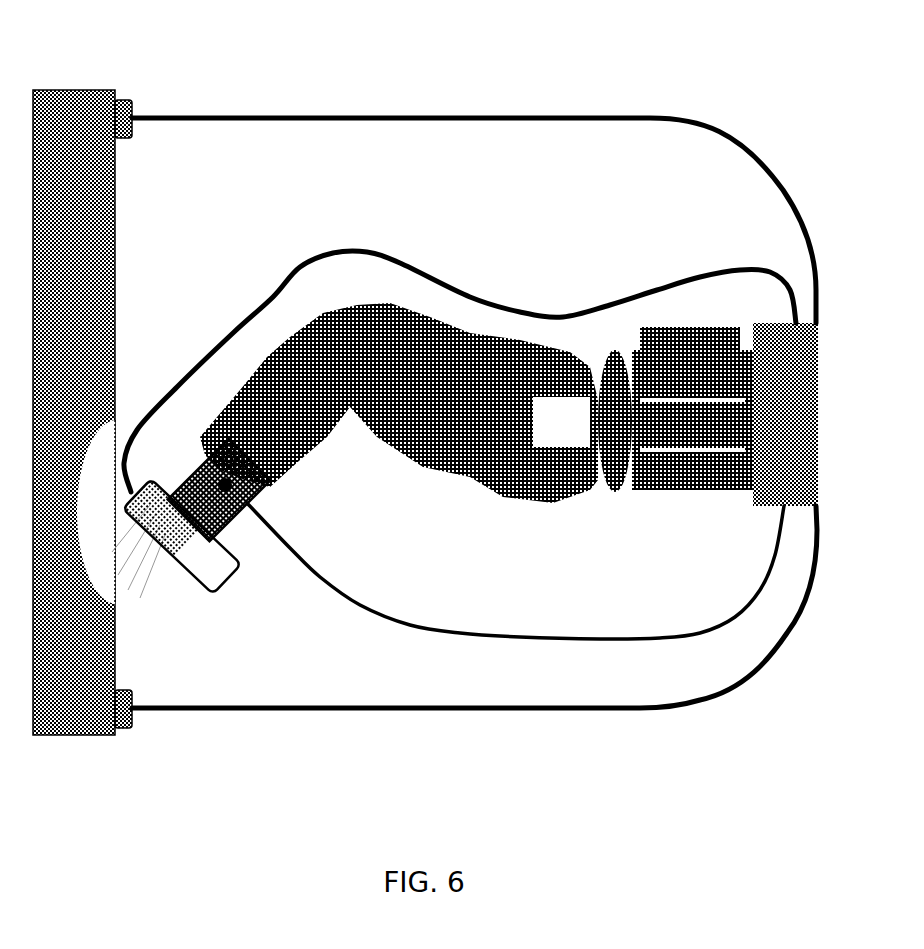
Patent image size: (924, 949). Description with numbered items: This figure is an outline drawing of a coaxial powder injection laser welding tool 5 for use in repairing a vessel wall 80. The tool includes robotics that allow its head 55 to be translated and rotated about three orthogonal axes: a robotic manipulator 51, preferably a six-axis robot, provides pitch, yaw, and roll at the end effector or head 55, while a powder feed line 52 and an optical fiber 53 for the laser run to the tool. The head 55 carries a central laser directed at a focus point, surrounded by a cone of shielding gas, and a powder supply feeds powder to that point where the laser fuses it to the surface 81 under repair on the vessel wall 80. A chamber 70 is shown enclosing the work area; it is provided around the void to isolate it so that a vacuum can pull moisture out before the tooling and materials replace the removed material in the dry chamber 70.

The coaxial powder injection laser welding tool 5 is at (438, 440).
The robotic manipulator 51 is at (462, 330).
The powder feed line 52 is at (653, 290).
The optical fiber 53 is at (613, 636).
The head 55 is at (231, 623).
The chamber 70 is at (528, 117).
The vessel wall 80 is at (88, 90).
The surface 81 is at (90, 445).